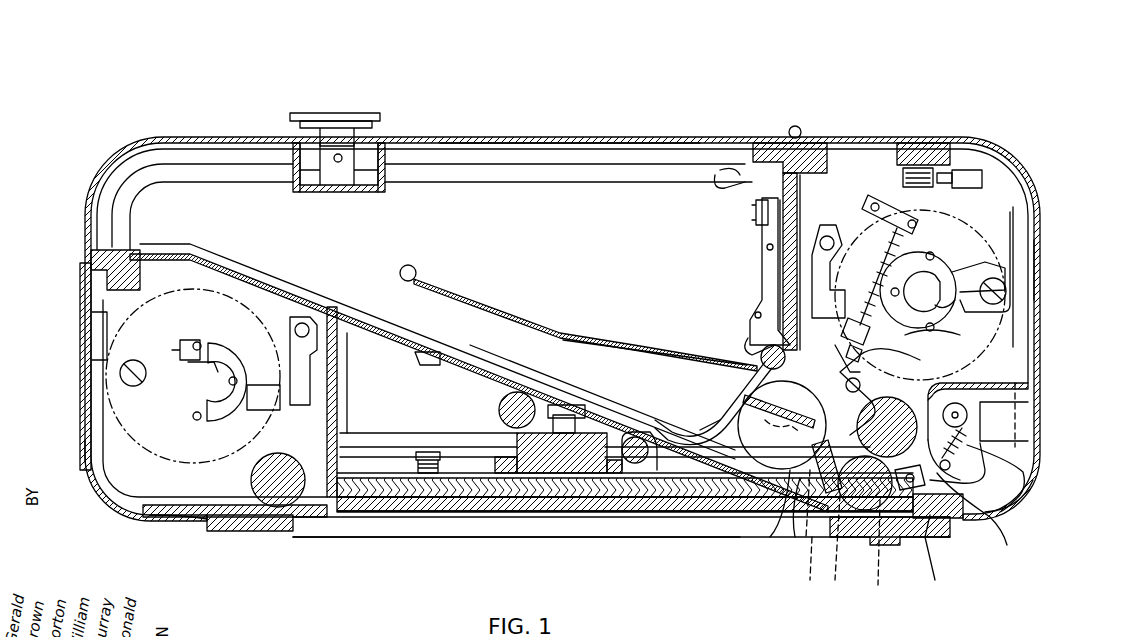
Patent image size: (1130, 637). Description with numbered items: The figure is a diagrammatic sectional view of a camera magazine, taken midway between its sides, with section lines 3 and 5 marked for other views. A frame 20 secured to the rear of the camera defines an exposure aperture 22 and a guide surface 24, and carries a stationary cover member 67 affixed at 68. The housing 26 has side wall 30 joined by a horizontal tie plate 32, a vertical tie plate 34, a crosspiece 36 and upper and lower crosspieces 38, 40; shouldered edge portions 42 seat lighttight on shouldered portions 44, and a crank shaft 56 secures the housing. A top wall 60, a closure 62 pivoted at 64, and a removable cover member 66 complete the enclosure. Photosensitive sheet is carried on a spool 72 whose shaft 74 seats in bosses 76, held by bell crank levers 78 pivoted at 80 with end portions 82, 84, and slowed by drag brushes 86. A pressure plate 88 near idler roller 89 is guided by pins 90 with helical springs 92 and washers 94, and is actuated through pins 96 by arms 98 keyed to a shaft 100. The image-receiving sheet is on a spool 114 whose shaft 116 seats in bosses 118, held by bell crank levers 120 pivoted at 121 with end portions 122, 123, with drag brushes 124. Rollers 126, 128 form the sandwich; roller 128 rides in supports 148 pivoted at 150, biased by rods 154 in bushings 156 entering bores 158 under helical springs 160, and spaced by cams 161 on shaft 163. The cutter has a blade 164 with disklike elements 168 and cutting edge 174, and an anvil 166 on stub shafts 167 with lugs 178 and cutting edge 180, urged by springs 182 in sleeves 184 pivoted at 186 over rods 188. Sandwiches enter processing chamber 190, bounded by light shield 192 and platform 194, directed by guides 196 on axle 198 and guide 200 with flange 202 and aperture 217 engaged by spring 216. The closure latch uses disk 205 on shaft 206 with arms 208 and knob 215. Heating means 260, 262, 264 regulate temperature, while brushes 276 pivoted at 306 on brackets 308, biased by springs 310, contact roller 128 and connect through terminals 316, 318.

The section line 3- 3 is at (120, 110).
The section line 5- 5 is at (915, 92).
The frame 20 is at (250, 545).
The exposure aperture 22 is at (580, 545).
The guide surface 24 is at (468, 517).
The housing 26 is at (196, 130).
The side wall 30 is at (538, 192).
The horizontal tie plate 32 is at (470, 470).
The vertical tie plate 34 is at (800, 205).
The crosspiece 36 is at (88, 258).
The upper crosspiece 38 is at (920, 143).
The lower crosspiece 40 is at (945, 520).
The shouldered edge portions 42 is at (925, 545).
The shouldered portions 44 is at (935, 580).
The crank shaft 56 is at (635, 435).
The top wall 60 is at (868, 137).
The closure 62 is at (473, 137).
The pivot 64 is at (790, 126).
The removable cover member 66 is at (1040, 266).
The stationary cover member 67 is at (82, 462).
The attachment point 68 is at (190, 525).
The spool 72 is at (214, 448).
The shaft 74 is at (188, 340).
The bosses 76 is at (218, 362).
The bell crank levers 78 is at (105, 333).
The pivot 80 is at (130, 386).
The end portions 82 is at (185, 392).
The end portions 84 is at (95, 302).
The drag brushes 86 is at (290, 345).
The pressure plate 88 is at (513, 505).
The idler roller 89 is at (270, 455).
The pins 90 is at (423, 505).
The helical spring 92 is at (433, 440).
The washer 94 is at (397, 447).
The pins 96 is at (585, 405).
The arms 98 is at (560, 415).
The shaft 100 is at (515, 395).
The spool 114 is at (985, 210).
The shaft 116 is at (950, 310).
The bosses 118 is at (938, 255).
The bell crank levers 120 is at (1020, 254).
The pivot 121 is at (1005, 290).
The end portions 122 is at (955, 268).
The end portions 123 is at (1012, 220).
The drag brushes 124 is at (770, 262).
The roller 126 is at (878, 578).
The roller 128 is at (900, 400).
The supports 148 is at (858, 378).
The pivot 150 is at (1005, 492).
The rods 154 is at (875, 230).
The bushing 156 is at (888, 196).
The bore 158 is at (840, 337).
The helical spring 160 is at (838, 240).
The cams 161 is at (838, 360).
The shaft 163 is at (935, 337).
The blade 164 is at (712, 537).
The anvil 166 is at (805, 540).
The stub shafts 167 is at (803, 580).
The disklike elements 168 is at (728, 390).
The cutting edge 174 is at (778, 432).
The lugs 178 is at (815, 445).
The cutting edge 180 is at (905, 380).
The springs 182 is at (855, 510).
The sleeve 184 is at (905, 495).
The pivot 186 is at (1008, 546).
The rod 188 is at (836, 580).
The processing chamber 190 is at (435, 232).
The light shield 192 is at (778, 236).
The platform 194 is at (316, 300).
The guides 196 is at (705, 425).
The axle 198 is at (760, 358).
The guide 200 is at (458, 295).
The flange 202 is at (745, 325).
The disk 205 is at (313, 150).
The shaft 206 is at (360, 128).
The arms 208 is at (295, 188).
The knob 215 is at (328, 113).
The spring 216 is at (712, 182).
The aperture 217 is at (588, 342).
The heating means 260 is at (758, 205).
The heating means 262 is at (430, 360).
The heating means 264 is at (288, 400).
The brushes 276 is at (990, 515).
The pivot 306 is at (1032, 392).
The brackets 308 is at (1020, 420).
The springs 310 is at (1000, 458).
The terminal 316 is at (970, 170).
The terminal 318 is at (900, 168).